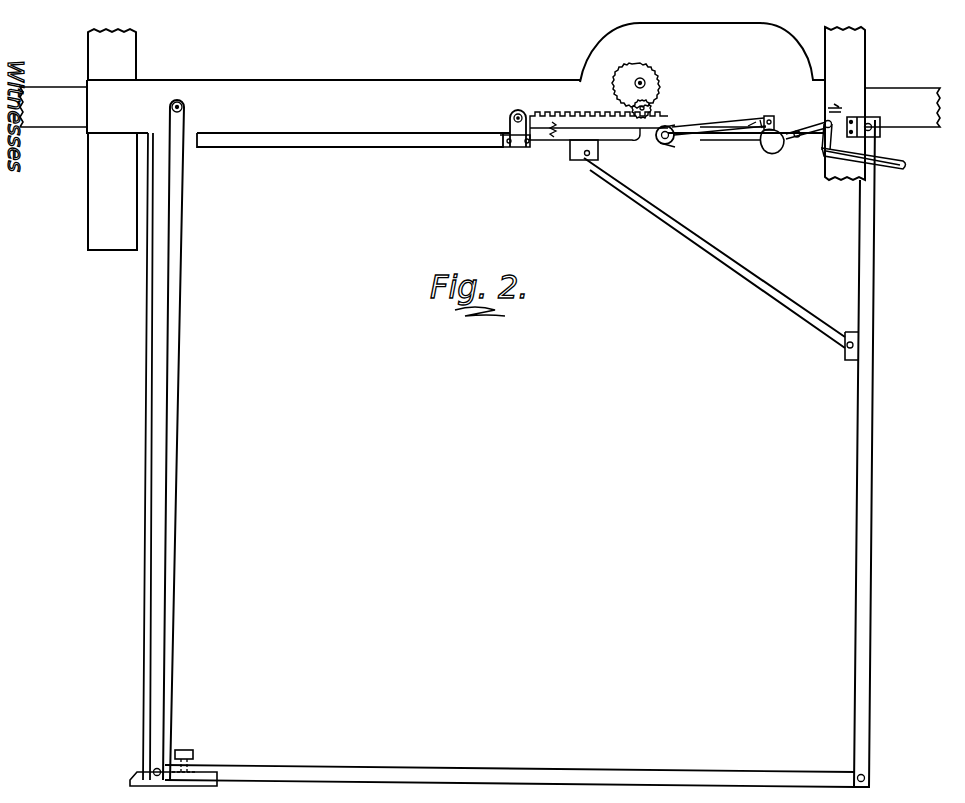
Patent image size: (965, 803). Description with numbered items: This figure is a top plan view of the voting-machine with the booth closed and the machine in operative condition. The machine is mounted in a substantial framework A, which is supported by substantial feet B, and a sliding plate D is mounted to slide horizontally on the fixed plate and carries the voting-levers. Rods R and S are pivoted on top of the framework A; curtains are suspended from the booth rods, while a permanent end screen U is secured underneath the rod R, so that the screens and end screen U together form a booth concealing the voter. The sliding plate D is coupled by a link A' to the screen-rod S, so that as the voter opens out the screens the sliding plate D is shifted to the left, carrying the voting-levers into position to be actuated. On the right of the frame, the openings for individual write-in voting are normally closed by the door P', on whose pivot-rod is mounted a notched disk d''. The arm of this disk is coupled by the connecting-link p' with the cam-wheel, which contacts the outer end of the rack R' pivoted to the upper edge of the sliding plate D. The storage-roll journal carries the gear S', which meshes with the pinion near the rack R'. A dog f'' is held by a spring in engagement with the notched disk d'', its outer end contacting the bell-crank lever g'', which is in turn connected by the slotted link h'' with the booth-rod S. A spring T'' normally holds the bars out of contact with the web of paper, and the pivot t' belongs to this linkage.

The feet B is at (132, 53).
The framework A is at (480, 101).
The sliding plate D is at (297, 140).
The rod R is at (191, 440).
The end screen U is at (147, 384).
The rod S is at (881, 453).
The link A' is at (714, 250).
The rack R' is at (599, 114).
The gear S' is at (636, 74).
The spring T'' is at (624, 103).
The pivot t' is at (681, 118).
The connecting-link p' is at (723, 112).
The door P' is at (733, 154).
The notched disk d'' is at (768, 151).
The dog f'' is at (809, 112).
The slotted link h'' is at (882, 147).
The bell-crank lever g'' is at (846, 97).
The pivot of rod S d' is at (883, 116).